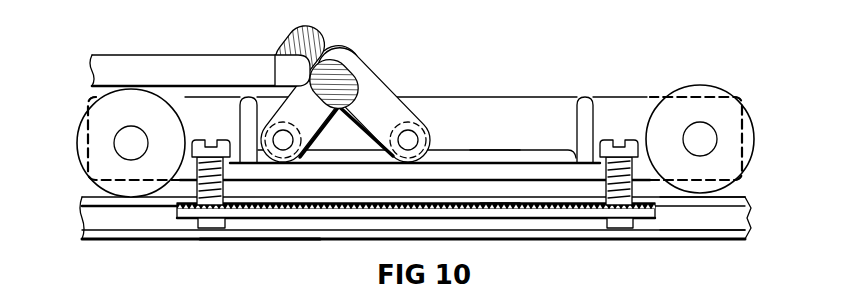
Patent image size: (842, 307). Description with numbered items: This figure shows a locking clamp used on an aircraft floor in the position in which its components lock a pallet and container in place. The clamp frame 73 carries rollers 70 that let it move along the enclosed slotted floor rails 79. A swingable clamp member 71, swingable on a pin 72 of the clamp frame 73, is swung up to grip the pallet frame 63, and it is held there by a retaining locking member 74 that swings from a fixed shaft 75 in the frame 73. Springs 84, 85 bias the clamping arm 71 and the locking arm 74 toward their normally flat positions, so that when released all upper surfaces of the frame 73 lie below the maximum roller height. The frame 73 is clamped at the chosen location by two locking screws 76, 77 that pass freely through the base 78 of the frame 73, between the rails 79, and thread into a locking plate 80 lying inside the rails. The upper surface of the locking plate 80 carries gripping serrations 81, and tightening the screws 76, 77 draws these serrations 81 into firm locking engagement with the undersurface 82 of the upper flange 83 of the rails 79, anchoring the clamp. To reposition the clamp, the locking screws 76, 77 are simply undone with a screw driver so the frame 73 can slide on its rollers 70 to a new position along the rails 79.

The pallet frame 63 is at (138, 55).
The rollers 70 is at (80, 146).
The swingable clamp member 71 is at (370, 80).
The pin 72 is at (422, 132).
The clamp frame 73 is at (540, 97).
The retaining locking member 74 is at (343, 57).
The fixed shaft 75 is at (310, 158).
The locking screw 76 is at (610, 138).
The locking screw 77 is at (212, 140).
The base 78 is at (537, 183).
The slotted floor rails 79 is at (752, 218).
The locking plate 80 is at (290, 218).
The gripping serrations 81 is at (497, 203).
The undersurface 82 is at (697, 210).
The upper flange 83 is at (735, 195).
The spring 84 is at (495, 150).
The spring 85 is at (289, 128).